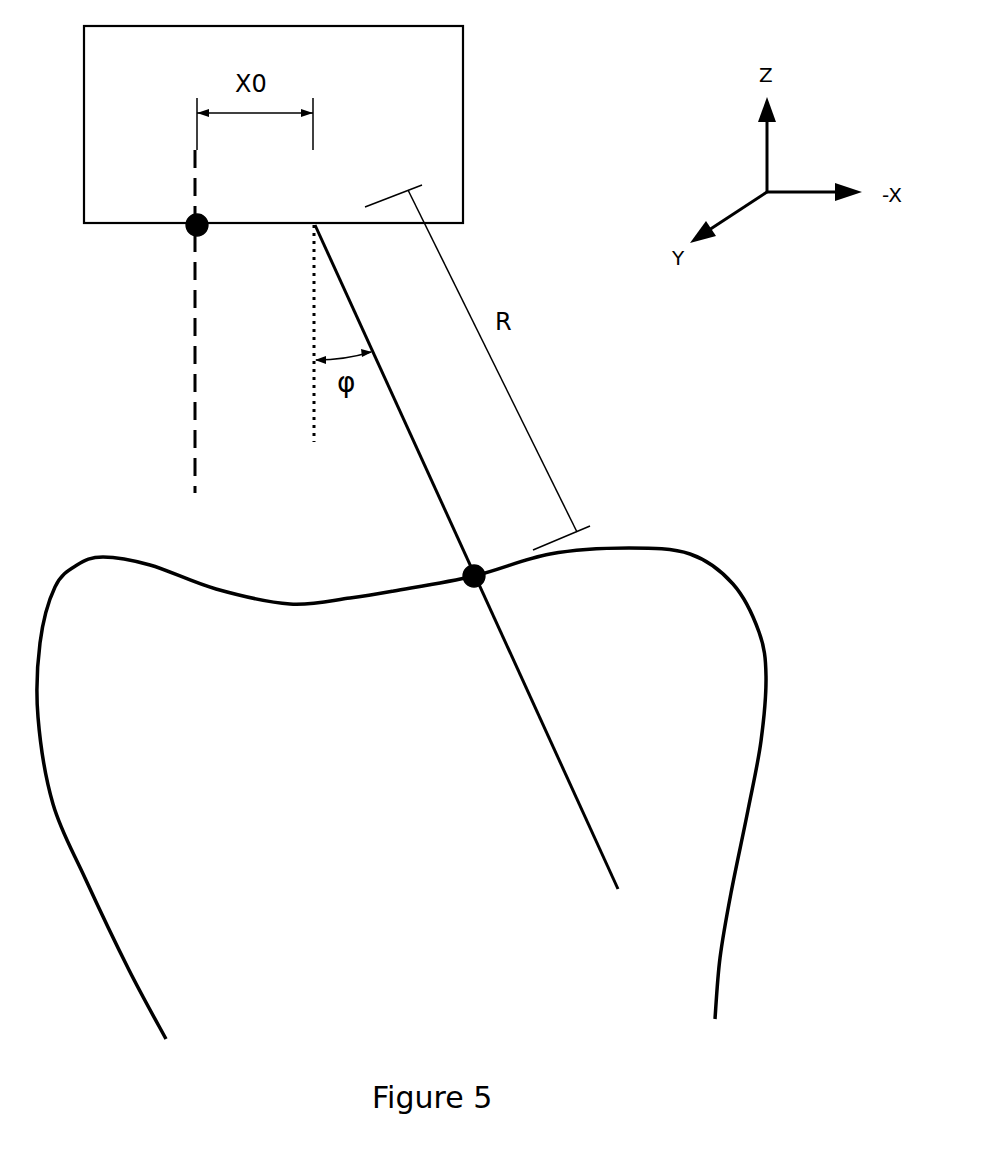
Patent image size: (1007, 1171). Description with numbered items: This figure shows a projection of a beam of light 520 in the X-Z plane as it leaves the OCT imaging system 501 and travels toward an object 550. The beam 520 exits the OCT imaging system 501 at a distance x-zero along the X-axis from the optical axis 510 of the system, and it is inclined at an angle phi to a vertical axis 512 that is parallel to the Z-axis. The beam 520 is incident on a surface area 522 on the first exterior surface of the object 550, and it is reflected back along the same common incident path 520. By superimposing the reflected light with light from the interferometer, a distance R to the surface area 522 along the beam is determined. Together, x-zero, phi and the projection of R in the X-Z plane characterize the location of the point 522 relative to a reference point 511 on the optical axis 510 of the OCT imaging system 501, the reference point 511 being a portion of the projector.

The OCT imaging system 501 is at (463, 60).
The optical axis 510 is at (194, 252).
The reference point 511 is at (195, 214).
The vertical axis 512 is at (310, 285).
The beam of light 520 is at (430, 453).
The surface area 522 is at (463, 579).
The object 550 is at (742, 578).